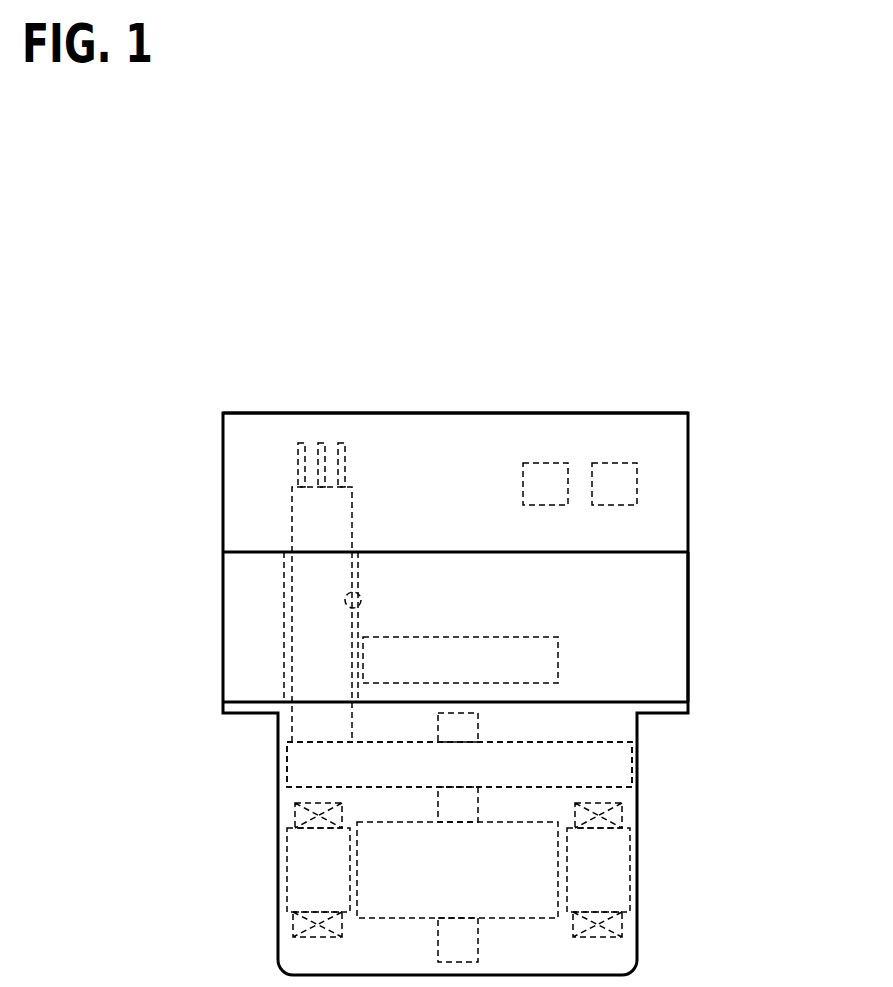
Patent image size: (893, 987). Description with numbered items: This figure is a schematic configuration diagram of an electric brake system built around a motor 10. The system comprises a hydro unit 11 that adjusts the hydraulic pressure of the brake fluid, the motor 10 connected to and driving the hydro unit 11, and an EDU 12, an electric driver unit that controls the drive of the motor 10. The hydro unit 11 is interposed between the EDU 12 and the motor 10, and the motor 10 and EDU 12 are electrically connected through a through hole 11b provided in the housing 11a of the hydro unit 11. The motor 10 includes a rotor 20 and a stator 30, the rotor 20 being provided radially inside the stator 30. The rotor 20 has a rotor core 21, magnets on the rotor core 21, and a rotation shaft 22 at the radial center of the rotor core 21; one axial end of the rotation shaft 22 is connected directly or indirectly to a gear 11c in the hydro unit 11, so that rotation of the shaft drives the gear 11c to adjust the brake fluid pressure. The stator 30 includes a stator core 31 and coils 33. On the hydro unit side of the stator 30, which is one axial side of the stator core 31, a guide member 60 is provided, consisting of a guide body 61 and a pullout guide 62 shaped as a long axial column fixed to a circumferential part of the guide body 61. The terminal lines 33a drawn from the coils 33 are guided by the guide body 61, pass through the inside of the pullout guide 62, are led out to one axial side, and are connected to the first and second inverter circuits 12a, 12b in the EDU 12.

The motor 10 is at (637, 755).
The hydro unit 11 is at (665, 585).
The housing 11a is at (688, 655).
The through hole 11b is at (358, 592).
The gear 11c is at (525, 637).
The EDU 12 is at (672, 470).
The first inverter circuit 12a is at (545, 463).
The second inverter circuit 12b is at (612, 463).
The rotor 20 is at (480, 933).
The rotor core 21 is at (420, 923).
The rotation shaft 22 is at (480, 725).
The stator 30 is at (632, 835).
The stator core 31 is at (637, 850).
The coils 33 is at (622, 922).
The terminal lines 33a is at (345, 455).
The guide member 60 is at (459, 764).
The guide body 61 is at (285, 752).
The pullout guide 62 is at (352, 505).